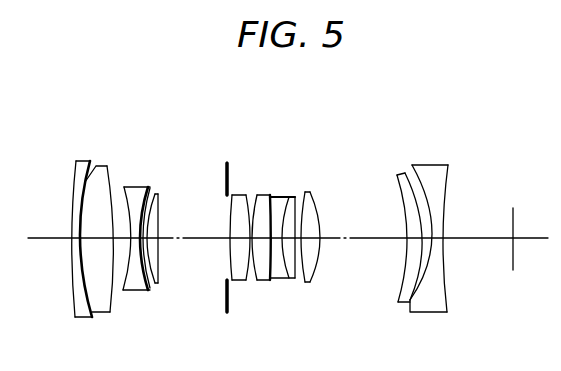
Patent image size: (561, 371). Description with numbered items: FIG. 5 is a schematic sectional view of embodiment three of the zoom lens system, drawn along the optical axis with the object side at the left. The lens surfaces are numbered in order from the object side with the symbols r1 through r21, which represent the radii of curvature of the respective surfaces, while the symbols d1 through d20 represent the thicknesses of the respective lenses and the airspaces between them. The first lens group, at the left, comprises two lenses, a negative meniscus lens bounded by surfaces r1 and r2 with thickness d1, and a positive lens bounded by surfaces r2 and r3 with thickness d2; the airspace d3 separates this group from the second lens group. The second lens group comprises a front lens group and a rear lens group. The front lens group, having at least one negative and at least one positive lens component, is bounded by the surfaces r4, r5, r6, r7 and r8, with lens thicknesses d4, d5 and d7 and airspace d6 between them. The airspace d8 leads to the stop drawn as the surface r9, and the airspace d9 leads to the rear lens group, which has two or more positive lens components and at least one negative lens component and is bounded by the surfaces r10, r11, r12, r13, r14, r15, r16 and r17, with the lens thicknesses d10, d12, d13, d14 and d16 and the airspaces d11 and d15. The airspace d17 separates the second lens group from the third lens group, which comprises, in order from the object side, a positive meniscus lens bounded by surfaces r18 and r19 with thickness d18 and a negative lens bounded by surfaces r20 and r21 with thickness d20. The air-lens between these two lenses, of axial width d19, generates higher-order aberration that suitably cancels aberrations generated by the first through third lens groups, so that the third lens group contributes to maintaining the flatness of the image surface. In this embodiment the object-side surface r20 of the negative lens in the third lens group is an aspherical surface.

The radius of curvature of the first lens surface r1 is at (74, 182).
The radius of curvature of the second lens surface r2 is at (88, 170).
The radius of curvature of the third lens surface r3 is at (100, 164).
The radius of curvature of the fourth lens surface r4 is at (110, 165).
The radius of curvature of the fifth lens surface r5 is at (125, 186).
The radius of curvature of the sixth lens surface r6 is at (140, 187).
The radius of curvature of the seventh lens surface r7 is at (150, 188).
The radius of curvature of the eighth lens surface r8 is at (160, 193).
The radius of curvature of the ninth surface r9 is at (225, 180).
The radius of curvature of the tenth lens surface r10 is at (233, 195).
The radius of curvature of the eleventh lens surface r11 is at (251, 196).
The radius of curvature of the twelfth lens surface r12 is at (257, 196).
The radius of curvature of the thirteenth lens surface r13 is at (269, 196).
The radius of curvature of the fourteenth lens surface r14 is at (290, 197).
The radius of curvature of the fifteenth lens surface r15 is at (299, 200).
The radius of curvature of the sixteenth lens surface r16 is at (306, 197).
The radius of curvature of the seventeenth lens surface r17 is at (313, 198).
The radius of curvature of the eighteenth lens surface r18 is at (400, 197).
The radius of curvature of the nineteenth lens surface r19 is at (404, 175).
The aspherical object-side surface of the negative lens r20 is at (421, 187).
The radius of curvature of the twenty-first lens surface r21 is at (449, 176).
The thickness of the first lens d1 is at (72, 247).
The thickness of the second lens d2 is at (79, 235).
The airspace between the first and second lens groups d3 is at (99, 243).
The thickness of the third lens d4 is at (114, 240).
The thickness of the fourth lens d5 is at (136, 242).
The airspace between the fourth and fifth lenses d6 is at (145, 233).
The thickness of the fifth lens d7 is at (155, 275).
The airspace between the front lens group and the stop d8 is at (185, 247).
The airspace between the stop and the rear lens group d9 is at (229, 245).
The thickness of the sixth lens d10 is at (235, 230).
The airspace between the sixth and seventh lenses d11 is at (248, 283).
The thickness of the seventh lens d12 is at (263, 282).
The thickness of the eighth lens d13 is at (277, 282).
The thickness of the ninth lens d14 is at (291, 280).
The airspace between the ninth and tenth lenses d15 is at (299, 233).
The thickness of the tenth lens d16 is at (317, 257).
The airspace between the second and third lens groups d17 is at (362, 262).
The thickness of the positive meniscus lens d18 is at (413, 240).
The airspace of the air-lens in the third lens group d19 is at (440, 222).
The thickness of the negative lens d20 is at (437, 241).